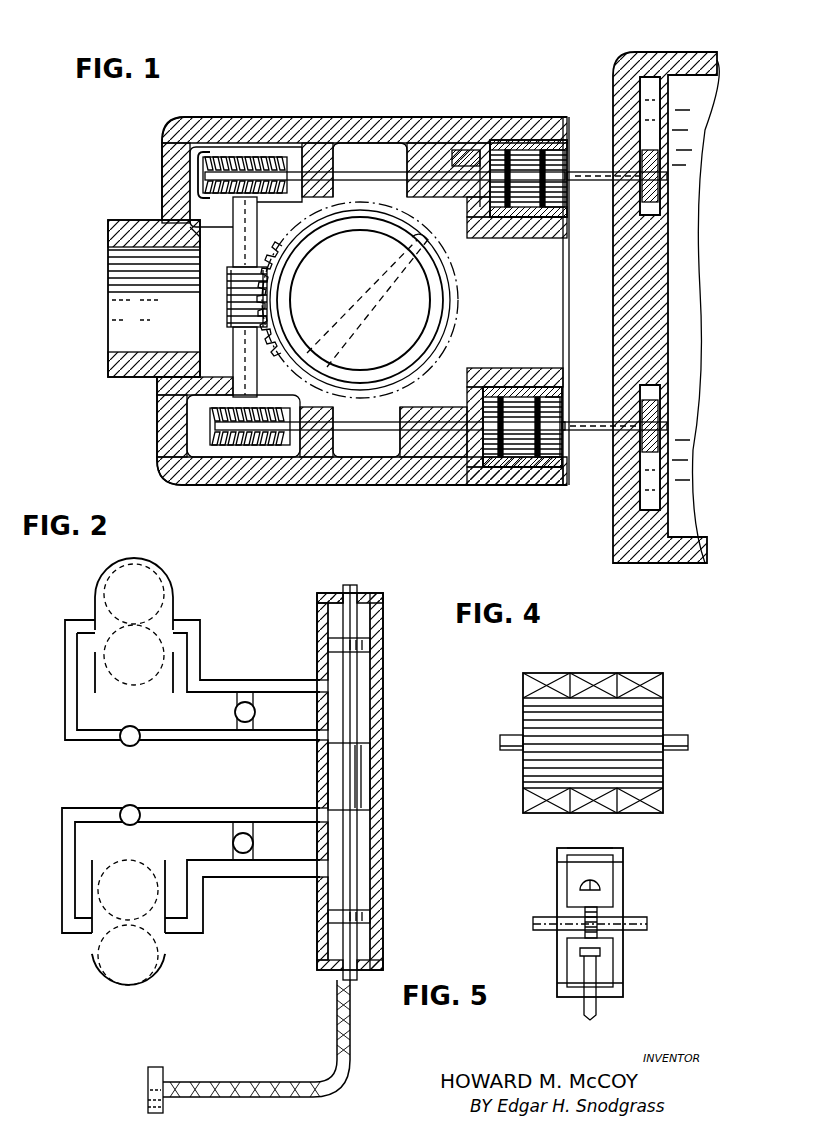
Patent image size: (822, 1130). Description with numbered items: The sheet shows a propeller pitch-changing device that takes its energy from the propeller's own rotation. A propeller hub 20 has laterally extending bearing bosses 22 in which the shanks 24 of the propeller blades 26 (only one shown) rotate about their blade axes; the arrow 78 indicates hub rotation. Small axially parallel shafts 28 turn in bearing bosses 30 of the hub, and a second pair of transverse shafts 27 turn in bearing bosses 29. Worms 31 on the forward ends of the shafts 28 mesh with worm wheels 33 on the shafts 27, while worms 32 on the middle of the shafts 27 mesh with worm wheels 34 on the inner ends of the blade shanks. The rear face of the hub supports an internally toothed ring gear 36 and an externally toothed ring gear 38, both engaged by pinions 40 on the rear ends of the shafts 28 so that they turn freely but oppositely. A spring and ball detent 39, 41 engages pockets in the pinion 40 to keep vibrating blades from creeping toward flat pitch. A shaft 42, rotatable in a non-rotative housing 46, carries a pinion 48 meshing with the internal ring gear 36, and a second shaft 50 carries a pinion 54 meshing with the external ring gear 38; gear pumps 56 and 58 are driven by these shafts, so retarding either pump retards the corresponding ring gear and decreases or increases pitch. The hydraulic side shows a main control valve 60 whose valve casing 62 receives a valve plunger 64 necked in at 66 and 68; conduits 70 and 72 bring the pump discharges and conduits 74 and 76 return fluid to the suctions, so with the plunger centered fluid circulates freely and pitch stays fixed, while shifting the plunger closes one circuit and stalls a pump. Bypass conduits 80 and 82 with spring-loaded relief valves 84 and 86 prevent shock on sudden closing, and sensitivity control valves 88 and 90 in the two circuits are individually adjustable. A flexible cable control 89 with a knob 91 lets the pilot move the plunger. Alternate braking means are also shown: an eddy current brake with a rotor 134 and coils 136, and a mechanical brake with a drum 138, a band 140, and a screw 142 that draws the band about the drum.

In FIG. 1, the propeller hub 20 is at (310, 120).
In FIG. 1, the bearing bosses 22 is at (445, 332).
In FIG. 1, the blade shanks 24 is at (392, 358).
In FIG. 1, the propeller blades 26 is at (378, 303).
In FIG. 1, the transverse shafts 27 is at (233, 342).
In FIG. 1, the axially parallel shafts 28 is at (345, 432).
In FIG. 1, the bearing bosses 29 is at (234, 368).
In FIG. 1, the bearing bosses 30 is at (322, 460).
In FIG. 1, the worms 31 is at (235, 160).
In FIG. 1, the worms 32 is at (228, 303).
In FIG. 1, the worm wheels 33 is at (200, 153).
In FIG. 1, the worm wheels 34 is at (290, 362).
In FIG. 1, the internally toothed ring gear 36 is at (515, 467).
In FIG. 1, the externally toothed ring gear 38 is at (522, 215).
In FIG. 1, the spring and ball detent 39 is at (462, 148).
In FIG. 1, the pinions 40 is at (500, 150).
In FIG. 1, the spring and ball detent 41 is at (478, 150).
In FIG. 1, the shaft 42 is at (590, 185).
In FIG. 1, the non-rotative housing 46 is at (680, 60).
In FIG. 1, the pinion 48 is at (555, 150).
In FIG. 1, the second shaft 50 is at (600, 420).
In FIG. 1, the pinion 54 is at (550, 395).
In FIG. 1, the gear pump 56 is at (668, 178).
In FIG. 2, the gear pump 56 is at (150, 594).
In FIG. 1, the gear pump 58 is at (668, 433).
In FIG. 2, the gear pump 58 is at (155, 965).
In FIG. 1, the arrow 78 is at (135, 222).
In FIG. 2, the main control valve 60 is at (395, 805).
In FIG. 2, the valve casing 62 is at (383, 648).
In FIG. 2, the valve plunger 64 is at (370, 772).
In FIG. 2, the necked-in portion 66 is at (357, 695).
In FIG. 2, the necked-in portion 68 is at (353, 857).
In FIG. 2, the conduit 70 is at (75, 702).
In FIG. 2, the conduit 72 is at (75, 838).
In FIG. 2, the conduit 74 is at (292, 680).
In FIG. 2, the conduit 76 is at (220, 878).
In FIG. 2, the bypass conduit 80 is at (250, 720).
In FIG. 2, the bypass conduit 82 is at (250, 845).
In FIG. 2, the relief valve 84 is at (235, 712).
In FIG. 2, the relief valve 86 is at (233, 843).
In FIG. 2, the sensitivity control valve 88 is at (135, 748).
In FIG. 2, the flexible cable control 89 is at (280, 1082).
In FIG. 2, the sensitivity control valve 90 is at (138, 806).
In FIG. 2, the knob 91 is at (163, 1075).
In FIG. 4, the rotor 134 is at (660, 762).
In FIG. 4, the coils 136 is at (657, 690).
In FIG. 5, the drum 138 is at (620, 957).
In FIG. 5, the band 140 is at (607, 873).
In FIG. 5, the screw 142 is at (597, 920).